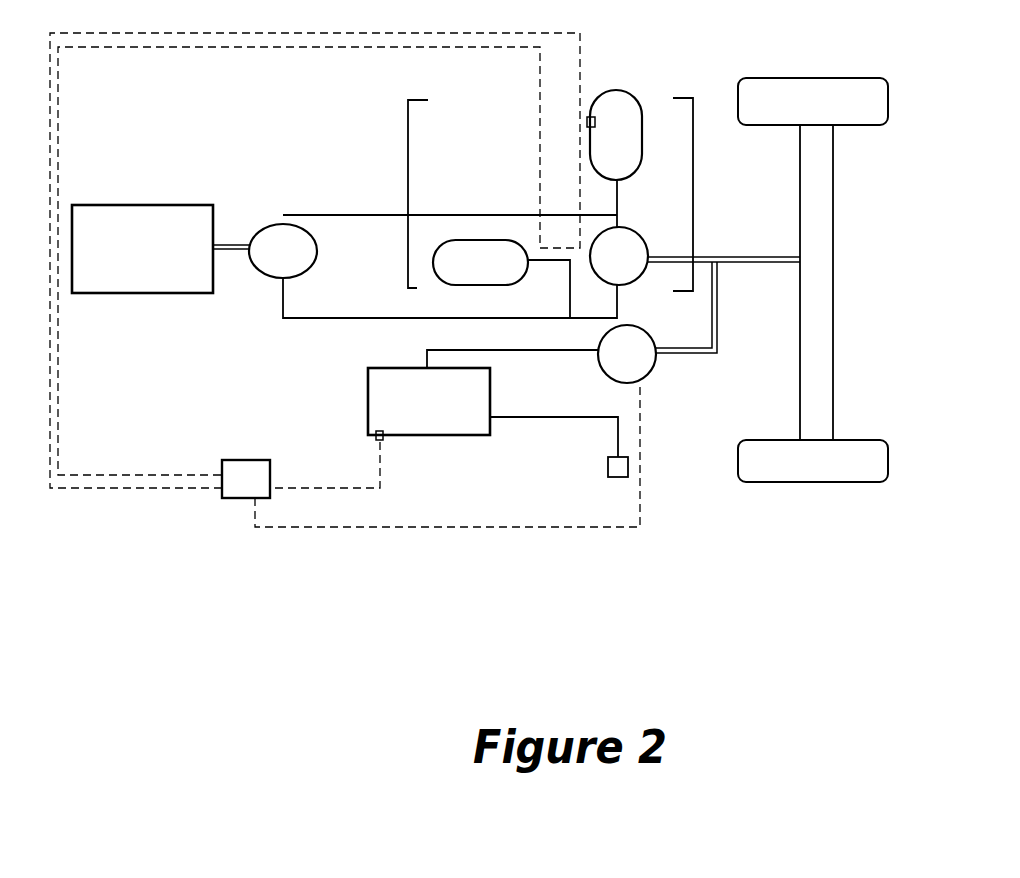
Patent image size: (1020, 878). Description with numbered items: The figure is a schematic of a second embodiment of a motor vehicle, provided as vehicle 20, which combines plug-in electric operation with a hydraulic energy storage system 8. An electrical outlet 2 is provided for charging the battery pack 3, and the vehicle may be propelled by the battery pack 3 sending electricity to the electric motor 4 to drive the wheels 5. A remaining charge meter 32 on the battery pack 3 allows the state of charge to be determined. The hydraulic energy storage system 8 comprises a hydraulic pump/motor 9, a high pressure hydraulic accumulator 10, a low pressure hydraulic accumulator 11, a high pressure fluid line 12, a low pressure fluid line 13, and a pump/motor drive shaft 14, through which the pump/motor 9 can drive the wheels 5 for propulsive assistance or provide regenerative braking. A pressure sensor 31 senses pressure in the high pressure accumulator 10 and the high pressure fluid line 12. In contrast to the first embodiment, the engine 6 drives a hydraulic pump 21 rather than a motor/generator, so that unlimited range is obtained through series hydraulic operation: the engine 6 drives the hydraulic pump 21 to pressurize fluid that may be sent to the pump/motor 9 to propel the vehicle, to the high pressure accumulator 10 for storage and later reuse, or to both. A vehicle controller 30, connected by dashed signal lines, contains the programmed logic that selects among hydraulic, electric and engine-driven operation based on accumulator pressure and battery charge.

The electrical outlet 2 is at (612, 472).
The battery pack 3 is at (435, 410).
The electric motor 4 is at (646, 370).
The wheels 5 is at (793, 78).
The engine 6 is at (147, 230).
The hydraulic energy storage system 8 is at (445, 113).
The hydraulic pump/motor 9 is at (628, 243).
The high pressure hydraulic accumulator 10 is at (607, 106).
The low pressure hydraulic accumulator 11 is at (473, 278).
The high pressure fluid line 12 is at (617, 194).
The low pressure fluid line 13 is at (554, 262).
The pump/motor drive shaft 14 is at (671, 258).
The vehicle 20 is at (368, 143).
The hydraulic pump 21 is at (272, 240).
The vehicle controller 30 is at (222, 470).
The pressure sensor 31 is at (587, 123).
The remaining charge meter 32 is at (378, 441).